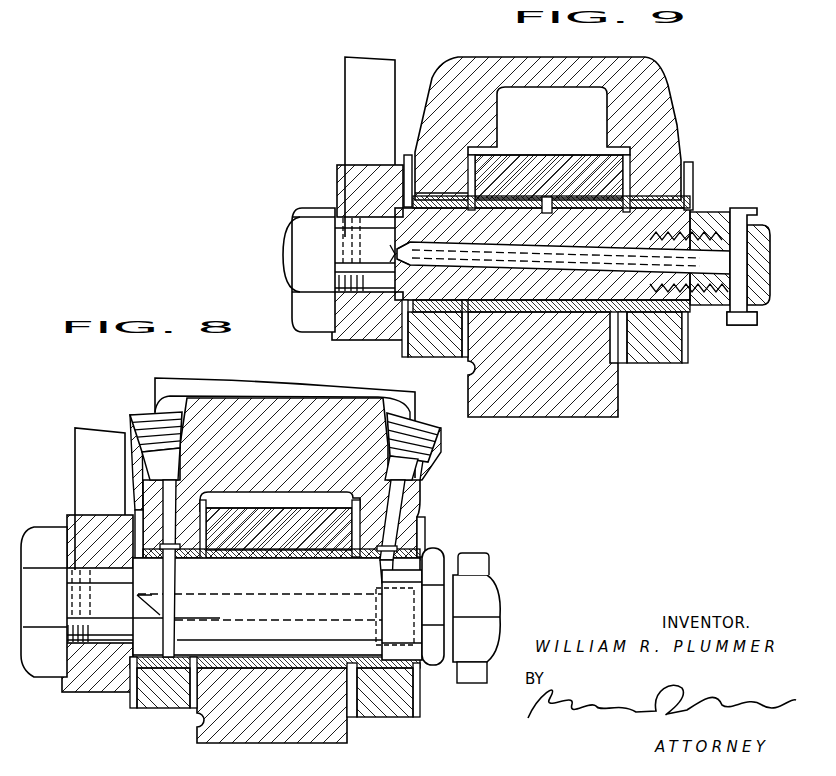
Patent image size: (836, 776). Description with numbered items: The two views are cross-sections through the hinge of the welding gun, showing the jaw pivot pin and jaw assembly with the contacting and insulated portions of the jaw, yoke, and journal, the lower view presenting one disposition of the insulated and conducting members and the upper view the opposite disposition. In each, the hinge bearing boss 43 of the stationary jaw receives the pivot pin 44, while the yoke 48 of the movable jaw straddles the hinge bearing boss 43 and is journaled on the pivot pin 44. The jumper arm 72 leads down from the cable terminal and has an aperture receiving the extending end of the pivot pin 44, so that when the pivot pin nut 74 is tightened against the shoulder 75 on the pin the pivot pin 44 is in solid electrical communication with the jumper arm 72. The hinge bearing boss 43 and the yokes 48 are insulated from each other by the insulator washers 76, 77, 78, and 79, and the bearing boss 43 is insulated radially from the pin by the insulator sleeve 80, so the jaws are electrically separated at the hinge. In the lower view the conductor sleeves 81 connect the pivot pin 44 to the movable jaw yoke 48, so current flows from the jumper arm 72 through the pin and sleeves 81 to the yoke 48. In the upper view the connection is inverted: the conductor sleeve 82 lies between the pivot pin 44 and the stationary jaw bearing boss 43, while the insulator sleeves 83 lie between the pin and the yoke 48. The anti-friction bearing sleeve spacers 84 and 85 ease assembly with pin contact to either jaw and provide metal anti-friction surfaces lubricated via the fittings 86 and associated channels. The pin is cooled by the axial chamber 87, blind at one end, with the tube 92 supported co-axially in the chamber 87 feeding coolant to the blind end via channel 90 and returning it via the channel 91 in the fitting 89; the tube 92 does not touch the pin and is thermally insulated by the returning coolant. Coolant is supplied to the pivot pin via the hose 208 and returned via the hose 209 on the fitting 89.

In FIG. 9, the hinge bearing boss 43 is at (542, 249).
In FIG. 8, the hinge bearing boss 43 is at (285, 563).
In FIG. 8, the pivot pin 44 is at (434, 556).
In FIG. 9, the yoke 48 is at (445, 350).
In FIG. 8, the yoke 48 is at (170, 700).
In FIG. 9, the jumper arm 72 is at (355, 100).
In FIG. 8, the jumper arm 72 is at (85, 453).
In FIG. 9, the pivot pin nut 74 is at (337, 190).
In FIG. 8, the pivot pin nut 74 is at (45, 538).
In FIG. 8, the shoulder 75 is at (135, 655).
In FIG. 9, the insulator washer 76 is at (408, 155).
In FIG. 8, the insulator washer 76 is at (137, 512).
In FIG. 9, the insulator washer 77 is at (472, 163).
In FIG. 8, the insulator washer 77 is at (205, 512).
In FIG. 9, the insulator washer 78 is at (625, 158).
In FIG. 8, the insulator washer 78 is at (353, 510).
In FIG. 9, the insulator washer 79 is at (692, 182).
In FIG. 8, the insulator washer 79 is at (424, 528).
In FIG. 8, the insulator sleeve 80 is at (246, 525).
In FIG. 8, the conductor sleeve 81 is at (163, 564).
In FIG. 9, the conductor sleeve 82 is at (530, 195).
In FIG. 9, the insulator sleeve 83 is at (437, 192).
In FIG. 9, the anti-friction bearing sleeve spacer 84 is at (470, 205).
In FIG. 8, the anti-friction bearing sleeve spacer 85 is at (300, 561).
In FIG. 8, the fitting 86 is at (153, 415).
In FIG. 9, the axial chamber 87 is at (418, 262).
In FIG. 9, the fitting 89 is at (768, 258).
In FIG. 8, the fitting 89 is at (500, 610).
In FIG. 9, the channel 90 is at (748, 220).
In FIG. 9, the channel 91 is at (745, 326).
In FIG. 9, the tube 92 is at (428, 250).
In FIG. 8, the hose 208 is at (490, 563).
In FIG. 8, the hose 209 is at (478, 684).